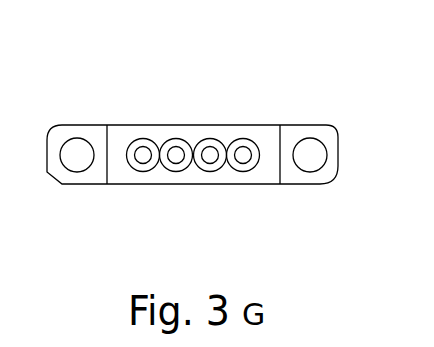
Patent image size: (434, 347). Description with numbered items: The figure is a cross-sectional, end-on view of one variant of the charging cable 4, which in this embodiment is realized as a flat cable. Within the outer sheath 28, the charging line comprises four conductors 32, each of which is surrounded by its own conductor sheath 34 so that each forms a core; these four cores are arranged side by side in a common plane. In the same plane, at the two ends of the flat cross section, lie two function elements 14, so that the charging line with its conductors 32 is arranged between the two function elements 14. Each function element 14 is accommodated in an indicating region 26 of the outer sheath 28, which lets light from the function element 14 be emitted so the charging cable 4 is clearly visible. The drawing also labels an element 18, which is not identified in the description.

The charging cable 4 is at (57, 113).
The function element 14 is at (322, 142).
The contact opening 18 is at (123, 143).
The indicating region 26 is at (295, 126).
The outer sheath 28 is at (192, 124).
The conductor 32 is at (210, 168).
The conductor sheath 34 is at (222, 165).